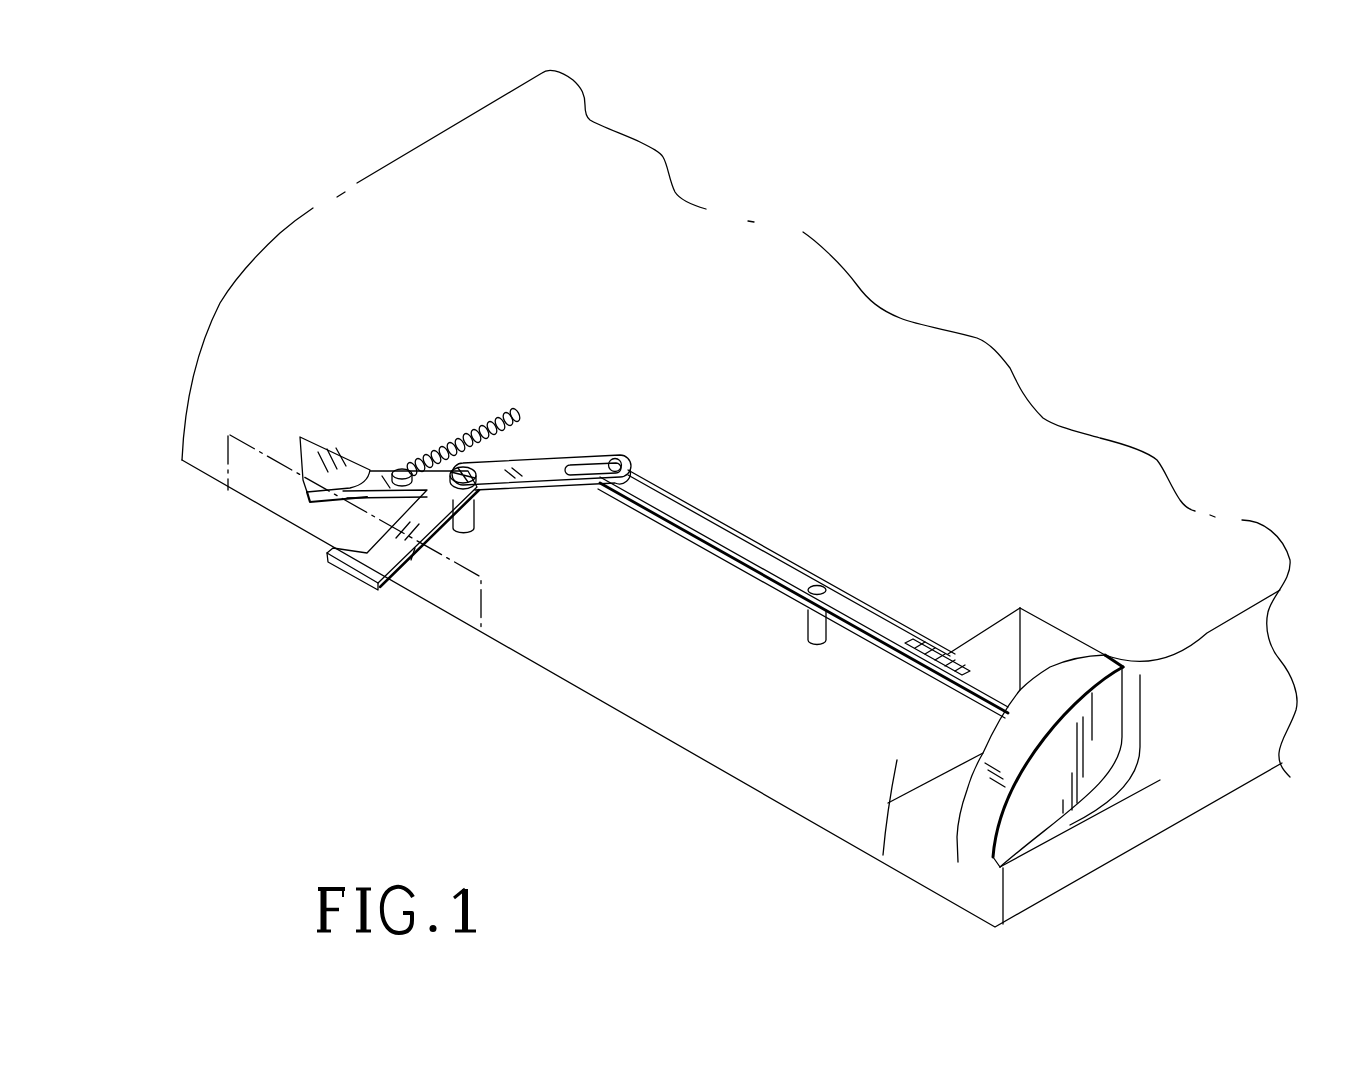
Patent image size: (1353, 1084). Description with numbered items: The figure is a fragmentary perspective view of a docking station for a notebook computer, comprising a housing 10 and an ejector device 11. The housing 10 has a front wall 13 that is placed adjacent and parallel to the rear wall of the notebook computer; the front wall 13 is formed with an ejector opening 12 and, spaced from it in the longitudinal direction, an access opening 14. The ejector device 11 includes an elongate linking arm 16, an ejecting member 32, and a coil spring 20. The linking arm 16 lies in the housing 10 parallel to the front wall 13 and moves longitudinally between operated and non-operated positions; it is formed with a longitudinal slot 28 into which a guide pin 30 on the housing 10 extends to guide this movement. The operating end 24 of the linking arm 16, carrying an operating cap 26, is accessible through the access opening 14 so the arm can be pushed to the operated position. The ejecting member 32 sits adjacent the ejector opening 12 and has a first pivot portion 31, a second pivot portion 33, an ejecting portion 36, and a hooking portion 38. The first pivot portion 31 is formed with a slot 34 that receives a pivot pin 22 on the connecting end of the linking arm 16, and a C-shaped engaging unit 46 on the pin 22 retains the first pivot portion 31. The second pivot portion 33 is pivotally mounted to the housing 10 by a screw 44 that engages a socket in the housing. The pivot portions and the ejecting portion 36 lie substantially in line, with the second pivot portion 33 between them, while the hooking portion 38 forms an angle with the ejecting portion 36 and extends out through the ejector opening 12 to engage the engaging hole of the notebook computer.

The housing 10 is at (1187, 797).
The ejector device 11 is at (792, 508).
The ejector opening 12 is at (423, 580).
The front wall 13 is at (578, 663).
The access opening 14 is at (927, 747).
The linking arm 16 is at (683, 520).
The coil spring 20 is at (465, 430).
The pivot pin 22 is at (618, 458).
The operating end 24 is at (983, 685).
The operating cap 26 is at (983, 830).
The longitudinal slot 28 is at (890, 637).
The guide pin 30 is at (813, 627).
The first pivot portion 31 is at (650, 443).
The ejecting member 32 is at (288, 608).
The second pivot portion 33 is at (519, 443).
The slot 34 is at (580, 457).
The ejecting portion 36 is at (327, 460).
The hooking portion 38 is at (357, 560).
The screw 44 is at (480, 497).
The C-shaped engaging unit 46 is at (633, 472).